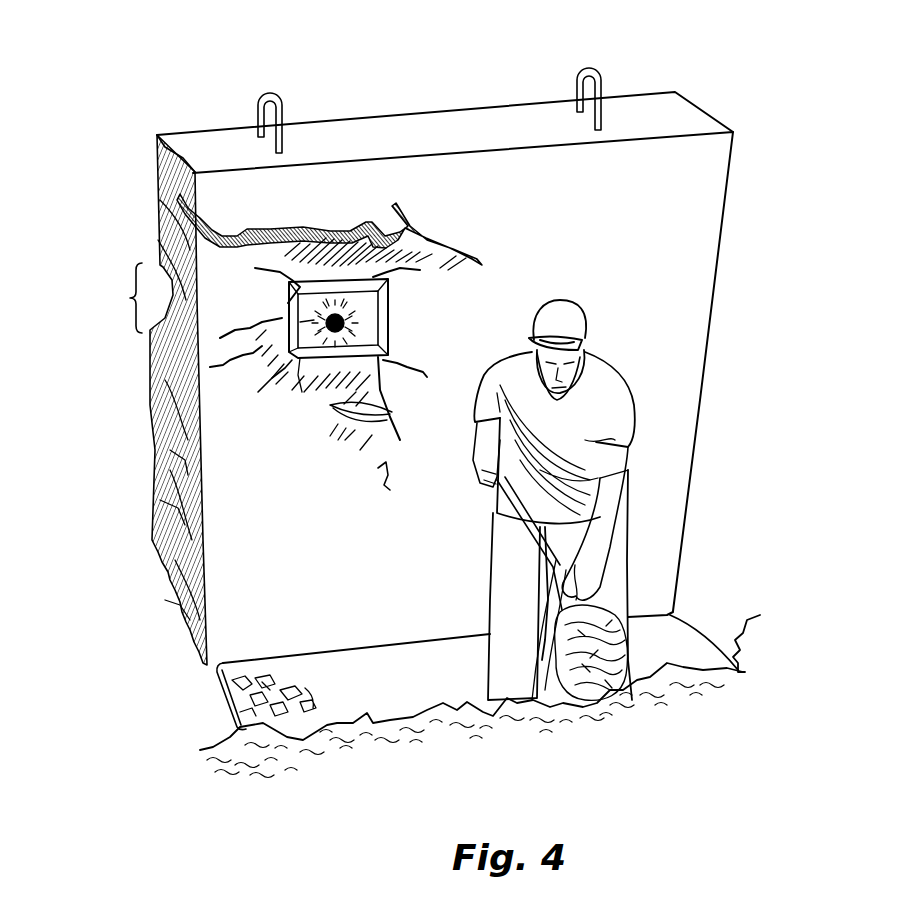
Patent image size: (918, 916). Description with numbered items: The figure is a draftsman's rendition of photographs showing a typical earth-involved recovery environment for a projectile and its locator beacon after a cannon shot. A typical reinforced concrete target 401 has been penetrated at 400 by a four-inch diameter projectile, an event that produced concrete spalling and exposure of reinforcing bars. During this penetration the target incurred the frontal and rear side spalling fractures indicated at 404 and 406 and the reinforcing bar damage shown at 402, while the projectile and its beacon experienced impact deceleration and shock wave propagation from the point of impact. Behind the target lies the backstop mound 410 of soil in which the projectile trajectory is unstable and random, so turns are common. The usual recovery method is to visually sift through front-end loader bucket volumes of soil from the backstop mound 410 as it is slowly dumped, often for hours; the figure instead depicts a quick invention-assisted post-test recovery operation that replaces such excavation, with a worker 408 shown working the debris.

The penetration point 400 is at (313, 344).
The reinforced concrete target 401 is at (512, 40).
The reinforcing bar damage 402 is at (333, 290).
The frontal spalling fracture 404 is at (133, 298).
The rear side spalling fracture 406 is at (203, 244).
The worker 408 is at (563, 302).
The backstop mound 410 is at (177, 734).